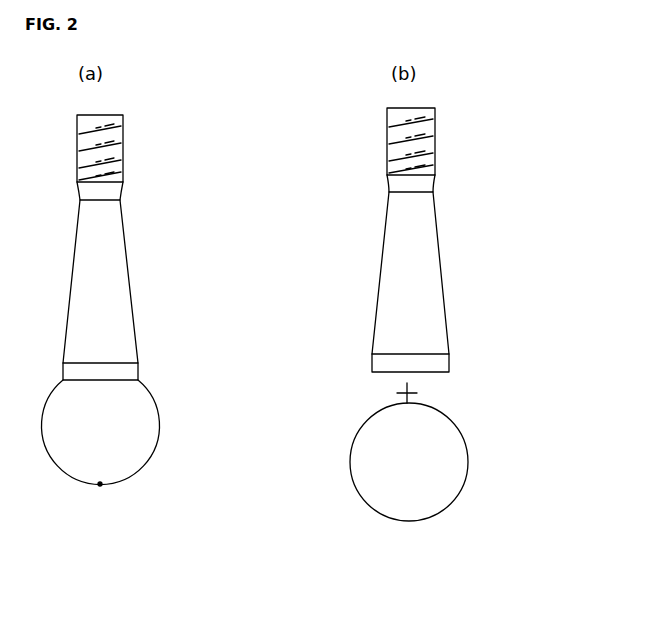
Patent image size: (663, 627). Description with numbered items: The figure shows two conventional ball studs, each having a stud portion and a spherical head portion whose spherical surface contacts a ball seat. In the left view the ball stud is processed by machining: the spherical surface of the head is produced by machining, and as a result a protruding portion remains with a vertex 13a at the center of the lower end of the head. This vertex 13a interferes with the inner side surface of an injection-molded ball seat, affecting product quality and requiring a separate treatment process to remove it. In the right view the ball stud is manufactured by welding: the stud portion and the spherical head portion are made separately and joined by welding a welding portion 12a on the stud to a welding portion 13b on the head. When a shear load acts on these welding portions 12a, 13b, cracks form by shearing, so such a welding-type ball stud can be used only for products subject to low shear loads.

The welding portion 12a is at (428, 372).
The vertex 13a is at (100, 487).
The welding portion 13b is at (425, 405).